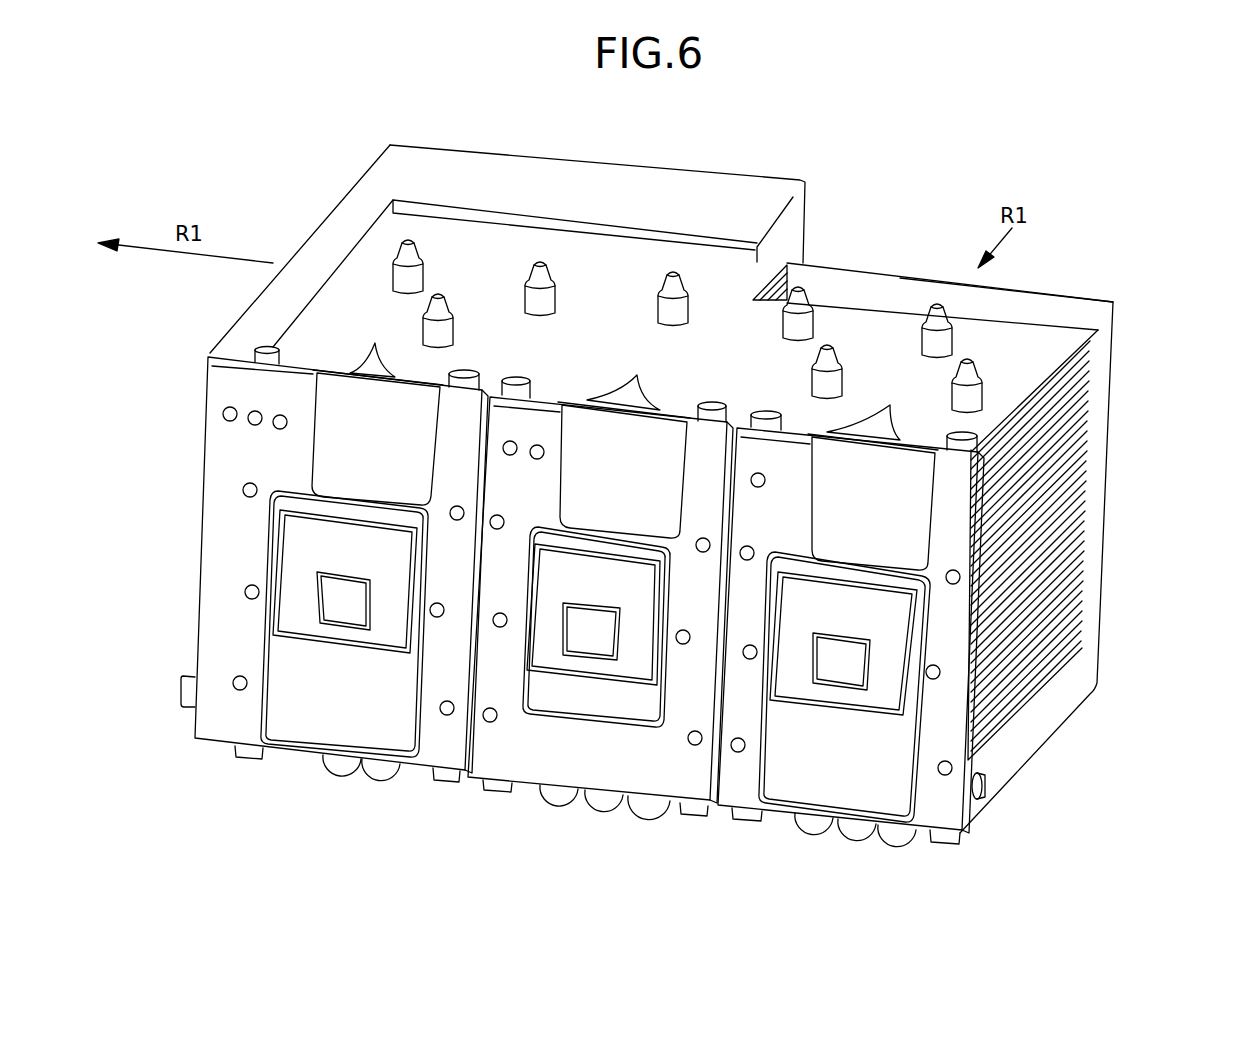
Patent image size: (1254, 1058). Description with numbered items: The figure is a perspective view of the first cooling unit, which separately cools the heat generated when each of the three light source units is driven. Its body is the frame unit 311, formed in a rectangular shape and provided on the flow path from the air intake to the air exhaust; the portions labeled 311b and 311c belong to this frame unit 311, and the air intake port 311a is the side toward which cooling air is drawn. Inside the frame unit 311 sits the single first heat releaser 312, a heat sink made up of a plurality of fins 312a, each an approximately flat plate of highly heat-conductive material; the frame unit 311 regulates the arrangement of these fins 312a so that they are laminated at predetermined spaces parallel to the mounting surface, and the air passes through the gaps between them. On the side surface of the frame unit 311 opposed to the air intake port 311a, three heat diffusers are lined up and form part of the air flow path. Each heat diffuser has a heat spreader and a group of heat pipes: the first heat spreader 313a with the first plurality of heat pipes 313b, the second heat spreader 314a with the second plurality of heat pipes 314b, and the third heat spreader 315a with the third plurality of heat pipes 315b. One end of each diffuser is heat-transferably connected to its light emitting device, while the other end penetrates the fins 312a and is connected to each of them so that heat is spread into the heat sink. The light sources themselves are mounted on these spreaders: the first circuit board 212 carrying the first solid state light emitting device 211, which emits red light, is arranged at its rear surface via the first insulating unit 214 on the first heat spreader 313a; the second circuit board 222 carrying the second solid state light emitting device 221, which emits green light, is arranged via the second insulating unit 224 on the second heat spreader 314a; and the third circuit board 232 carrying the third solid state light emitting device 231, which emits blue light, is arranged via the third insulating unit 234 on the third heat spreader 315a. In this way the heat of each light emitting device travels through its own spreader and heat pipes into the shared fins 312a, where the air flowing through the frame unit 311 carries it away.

The frame unit 311 is at (1113, 345).
The air intake port 311a is at (1062, 312).
The side wall of base plate 311b is at (347, 190).
The rear wall of base plate 311c is at (710, 207).
The first heat releaser 312 is at (562, 255).
The fins 312a is at (1087, 465).
The first heat spreader 313a is at (930, 807).
The first plurality of heat pipes 313b is at (952, 390).
The second heat spreader 314a is at (685, 775).
The second plurality of heat pipes 314b is at (525, 300).
The third heat spreader 315a is at (437, 745).
The third plurality of heat pipes 315b is at (424, 270).
The first solid state light emitting device 211 is at (817, 688).
The first circuit board 212 is at (847, 700).
The first insulating unit 214 is at (775, 773).
The second solid state light emitting device 221 is at (573, 657).
The second circuit board 222 is at (600, 668).
The second insulating unit 224 is at (530, 702).
The third solid state light emitting device 231 is at (323, 630).
The third circuit board 232 is at (352, 637).
The third insulating unit 234 is at (282, 710).